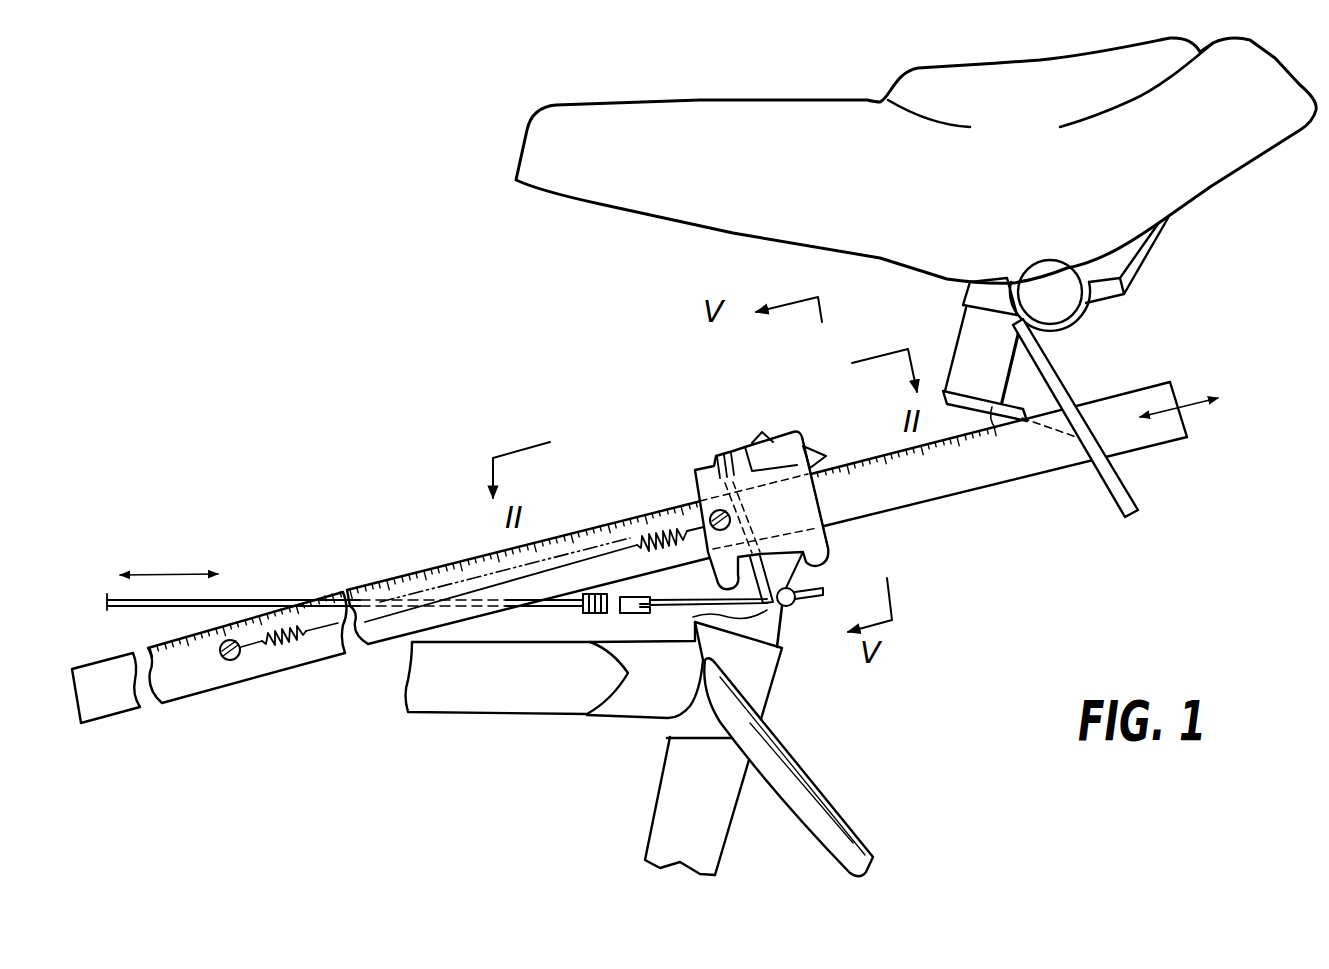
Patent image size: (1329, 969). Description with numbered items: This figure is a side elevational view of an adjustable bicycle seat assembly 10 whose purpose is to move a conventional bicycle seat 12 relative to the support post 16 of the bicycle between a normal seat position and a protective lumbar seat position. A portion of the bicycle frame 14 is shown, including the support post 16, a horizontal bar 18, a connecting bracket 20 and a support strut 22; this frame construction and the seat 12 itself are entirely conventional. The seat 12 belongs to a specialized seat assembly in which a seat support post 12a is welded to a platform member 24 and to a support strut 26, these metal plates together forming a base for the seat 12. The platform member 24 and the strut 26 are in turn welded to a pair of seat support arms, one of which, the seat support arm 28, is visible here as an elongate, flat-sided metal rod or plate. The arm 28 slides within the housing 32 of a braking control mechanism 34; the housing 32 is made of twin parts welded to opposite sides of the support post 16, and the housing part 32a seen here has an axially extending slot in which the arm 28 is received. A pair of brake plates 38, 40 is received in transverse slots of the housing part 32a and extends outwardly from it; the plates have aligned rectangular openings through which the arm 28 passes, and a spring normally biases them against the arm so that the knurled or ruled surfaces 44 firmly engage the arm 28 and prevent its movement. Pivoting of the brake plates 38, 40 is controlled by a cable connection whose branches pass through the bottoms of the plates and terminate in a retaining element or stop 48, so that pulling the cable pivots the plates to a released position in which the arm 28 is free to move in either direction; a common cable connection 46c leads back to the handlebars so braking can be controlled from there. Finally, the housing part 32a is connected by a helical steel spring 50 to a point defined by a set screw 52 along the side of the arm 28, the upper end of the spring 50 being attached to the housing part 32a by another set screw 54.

The adjustable seat assembly 10 is at (1006, 552).
The bicycle seat 12 is at (1226, 192).
The seat support post 12a is at (967, 330).
The bicycle frame 14 is at (514, 742).
The support post 16 is at (645, 850).
The horizontal bar 18 is at (433, 703).
The connecting bracket 20 is at (758, 670).
The support strut 22 is at (788, 778).
The platform member 24 is at (1020, 440).
The support strut 26 is at (1057, 367).
The seat support arm 28 is at (1140, 433).
The housing 32 is at (750, 428).
The housing part 32a is at (800, 500).
The braking control mechanism 34 is at (832, 545).
The brake plate 38 is at (704, 610).
The brake plate 40 is at (786, 628).
The knurled or ruled surface 44 is at (455, 565).
The common cable connection 46c is at (150, 610).
The retaining element or stop 48 is at (796, 590).
The helical steel spring 50 is at (287, 608).
The set screw 52 is at (234, 662).
The set screw 54 is at (698, 497).